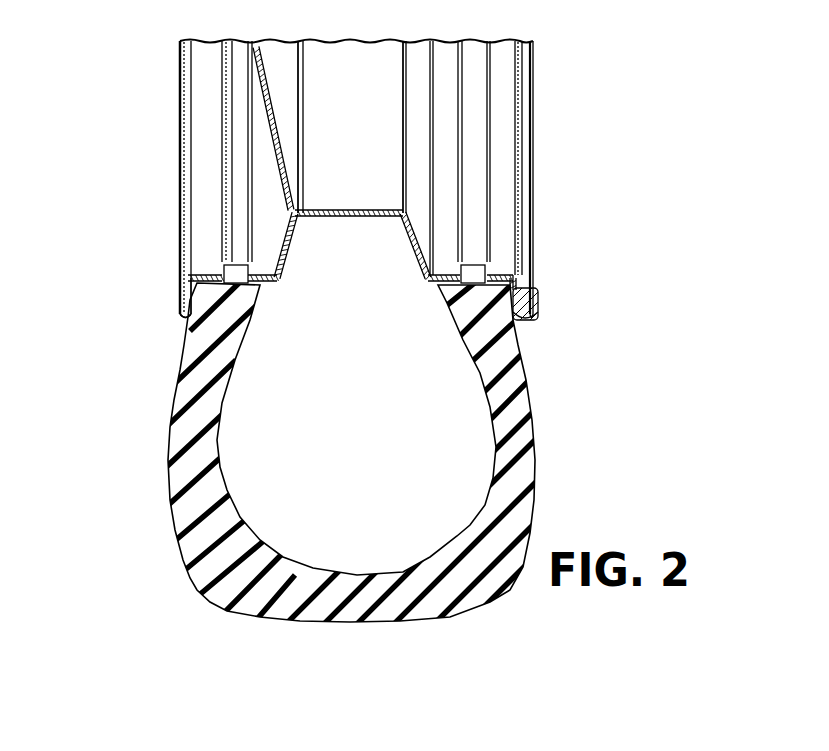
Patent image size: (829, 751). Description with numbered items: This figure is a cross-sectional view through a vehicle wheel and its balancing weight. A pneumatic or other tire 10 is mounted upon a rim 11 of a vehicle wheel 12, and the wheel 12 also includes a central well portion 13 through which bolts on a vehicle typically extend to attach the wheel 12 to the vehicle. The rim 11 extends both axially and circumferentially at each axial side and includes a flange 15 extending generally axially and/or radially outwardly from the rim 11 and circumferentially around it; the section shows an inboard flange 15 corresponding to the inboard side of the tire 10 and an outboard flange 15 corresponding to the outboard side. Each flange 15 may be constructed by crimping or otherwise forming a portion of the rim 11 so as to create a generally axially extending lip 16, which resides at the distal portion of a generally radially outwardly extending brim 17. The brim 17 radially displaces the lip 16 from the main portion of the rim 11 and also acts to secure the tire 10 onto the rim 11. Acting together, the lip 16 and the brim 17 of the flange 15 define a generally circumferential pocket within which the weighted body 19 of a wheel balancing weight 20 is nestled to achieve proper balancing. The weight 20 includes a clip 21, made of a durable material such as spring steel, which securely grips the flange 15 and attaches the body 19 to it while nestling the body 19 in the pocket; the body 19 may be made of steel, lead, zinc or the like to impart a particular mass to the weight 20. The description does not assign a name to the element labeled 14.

The tire 10 is at (176, 470).
The rim 11 is at (174, 116).
The vehicle wheel 12 is at (488, 42).
The central well portion 13 is at (360, 124).
The hatched insert wall 14 is at (352, 168).
The flange 15 is at (203, 293).
The lip 16 is at (187, 316).
The brim 17 is at (192, 303).
The weighted body 19 is at (523, 291).
The wheel balancing weight 20 is at (538, 296).
The clip 21 is at (523, 317).